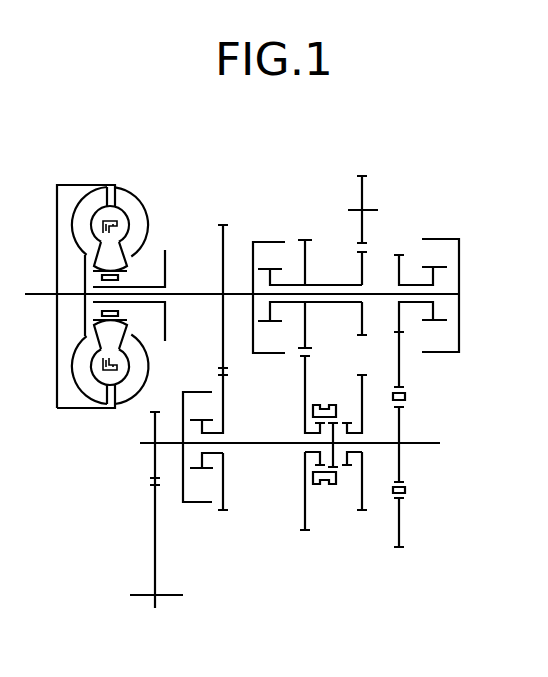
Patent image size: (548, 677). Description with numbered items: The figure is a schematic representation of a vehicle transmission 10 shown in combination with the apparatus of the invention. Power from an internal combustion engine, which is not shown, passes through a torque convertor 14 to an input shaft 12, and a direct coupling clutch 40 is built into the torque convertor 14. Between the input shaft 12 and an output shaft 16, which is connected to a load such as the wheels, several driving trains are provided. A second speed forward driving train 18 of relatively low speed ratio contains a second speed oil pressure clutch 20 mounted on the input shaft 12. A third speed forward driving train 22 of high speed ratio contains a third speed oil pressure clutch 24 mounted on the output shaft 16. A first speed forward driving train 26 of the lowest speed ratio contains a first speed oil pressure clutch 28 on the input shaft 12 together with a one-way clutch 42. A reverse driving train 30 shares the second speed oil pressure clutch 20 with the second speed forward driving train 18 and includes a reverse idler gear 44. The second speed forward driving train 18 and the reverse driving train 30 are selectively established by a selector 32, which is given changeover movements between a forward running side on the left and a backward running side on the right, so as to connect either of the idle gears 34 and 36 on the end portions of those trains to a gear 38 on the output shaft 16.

The transmission 10 is at (184, 166).
The input shaft 12 is at (194, 294).
The torque convertor 14 is at (135, 197).
The output shaft 16 is at (258, 445).
The second speed forward driving train 18 is at (300, 358).
The second speed oil pressure clutch 20 is at (273, 242).
The third speed forward driving train 22 is at (221, 370).
The third speed oil pressure clutch 24 is at (201, 503).
The first speed forward driving train 26 is at (403, 374).
The first speed oil pressure clutch 28 is at (444, 239).
The reverse driving train 30 is at (362, 347).
The selector 32 is at (322, 484).
The idle gear 34 is at (313, 463).
The idle gear 36 is at (357, 460).
The gear 38 is at (348, 428).
The direct coupling clutch 40 is at (129, 224).
The one-way clutch 42 is at (405, 397).
The reverse idler gear 44 is at (366, 196).